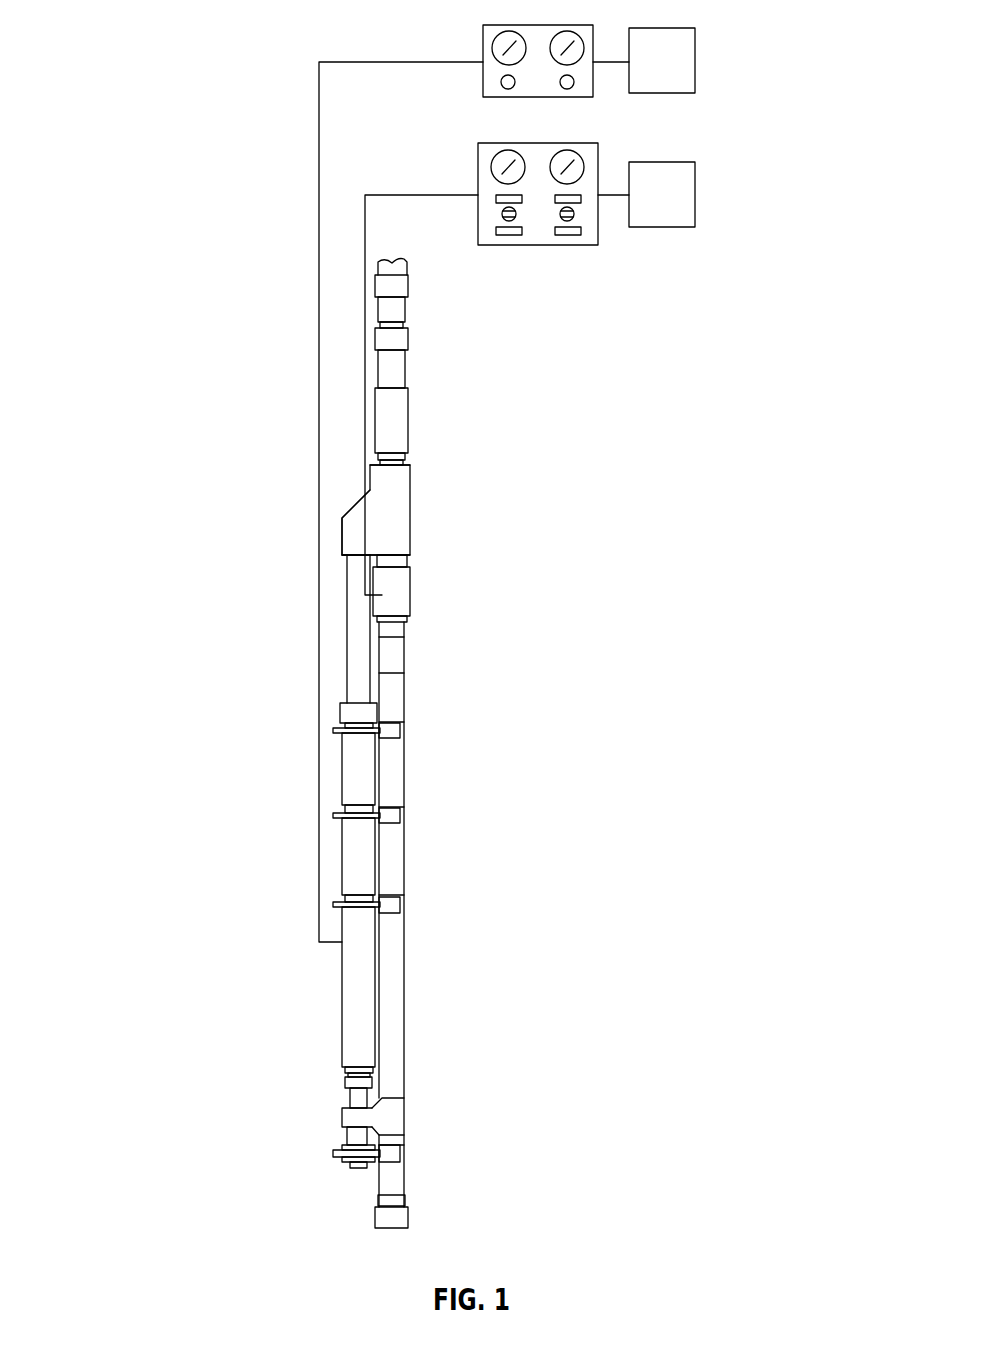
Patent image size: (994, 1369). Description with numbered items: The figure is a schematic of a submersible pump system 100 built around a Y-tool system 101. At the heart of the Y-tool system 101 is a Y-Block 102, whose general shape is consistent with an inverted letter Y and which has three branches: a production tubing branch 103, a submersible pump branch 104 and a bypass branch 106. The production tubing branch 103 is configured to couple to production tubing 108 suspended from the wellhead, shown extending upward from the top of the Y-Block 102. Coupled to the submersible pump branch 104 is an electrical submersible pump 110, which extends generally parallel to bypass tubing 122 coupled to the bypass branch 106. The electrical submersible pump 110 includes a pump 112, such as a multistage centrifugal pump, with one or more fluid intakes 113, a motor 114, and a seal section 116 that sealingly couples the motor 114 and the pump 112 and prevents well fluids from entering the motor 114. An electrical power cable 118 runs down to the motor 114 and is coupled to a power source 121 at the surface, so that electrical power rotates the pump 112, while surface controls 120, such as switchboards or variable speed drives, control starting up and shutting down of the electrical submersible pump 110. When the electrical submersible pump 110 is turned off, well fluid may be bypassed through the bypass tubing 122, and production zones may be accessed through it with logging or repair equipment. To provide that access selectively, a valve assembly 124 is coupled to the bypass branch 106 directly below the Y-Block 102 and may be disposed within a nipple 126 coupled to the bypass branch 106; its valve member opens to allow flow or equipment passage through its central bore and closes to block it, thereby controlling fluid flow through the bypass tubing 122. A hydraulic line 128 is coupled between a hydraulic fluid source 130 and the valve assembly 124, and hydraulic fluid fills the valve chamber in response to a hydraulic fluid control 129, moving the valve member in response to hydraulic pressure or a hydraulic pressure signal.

The submersible pump system 100 is at (178, 280).
The Y-tool system 101 is at (432, 441).
The Y-Block 102 is at (400, 508).
The production tubing branch 103 is at (411, 476).
The submersible pump branch 104 is at (352, 537).
The bypass branch 106 is at (400, 547).
The production tubing 108 is at (389, 362).
The electrical submersible pump 110 is at (178, 776).
The pump 112 is at (350, 758).
The fluid intake 113 is at (342, 808).
The motor 114 is at (350, 983).
The seal section 116 is at (350, 845).
The electrical power cable 118 is at (319, 197).
The surface controls 120 is at (582, 89).
The power source 121 is at (695, 62).
The bypass tubing 122 is at (422, 778).
The valve assembly 124 is at (402, 587).
The nipple 126 is at (434, 629).
The hydraulic line 128 is at (374, 413).
The hydraulic fluid control 129 is at (584, 219).
The hydraulic fluid source 130 is at (695, 195).